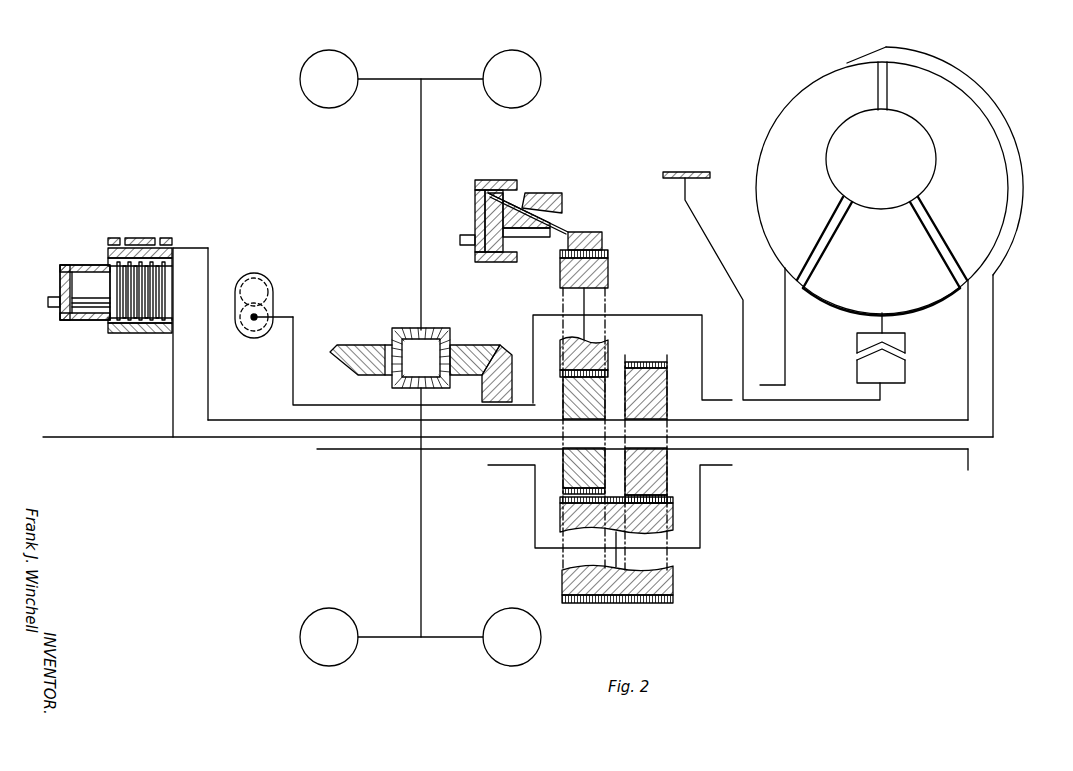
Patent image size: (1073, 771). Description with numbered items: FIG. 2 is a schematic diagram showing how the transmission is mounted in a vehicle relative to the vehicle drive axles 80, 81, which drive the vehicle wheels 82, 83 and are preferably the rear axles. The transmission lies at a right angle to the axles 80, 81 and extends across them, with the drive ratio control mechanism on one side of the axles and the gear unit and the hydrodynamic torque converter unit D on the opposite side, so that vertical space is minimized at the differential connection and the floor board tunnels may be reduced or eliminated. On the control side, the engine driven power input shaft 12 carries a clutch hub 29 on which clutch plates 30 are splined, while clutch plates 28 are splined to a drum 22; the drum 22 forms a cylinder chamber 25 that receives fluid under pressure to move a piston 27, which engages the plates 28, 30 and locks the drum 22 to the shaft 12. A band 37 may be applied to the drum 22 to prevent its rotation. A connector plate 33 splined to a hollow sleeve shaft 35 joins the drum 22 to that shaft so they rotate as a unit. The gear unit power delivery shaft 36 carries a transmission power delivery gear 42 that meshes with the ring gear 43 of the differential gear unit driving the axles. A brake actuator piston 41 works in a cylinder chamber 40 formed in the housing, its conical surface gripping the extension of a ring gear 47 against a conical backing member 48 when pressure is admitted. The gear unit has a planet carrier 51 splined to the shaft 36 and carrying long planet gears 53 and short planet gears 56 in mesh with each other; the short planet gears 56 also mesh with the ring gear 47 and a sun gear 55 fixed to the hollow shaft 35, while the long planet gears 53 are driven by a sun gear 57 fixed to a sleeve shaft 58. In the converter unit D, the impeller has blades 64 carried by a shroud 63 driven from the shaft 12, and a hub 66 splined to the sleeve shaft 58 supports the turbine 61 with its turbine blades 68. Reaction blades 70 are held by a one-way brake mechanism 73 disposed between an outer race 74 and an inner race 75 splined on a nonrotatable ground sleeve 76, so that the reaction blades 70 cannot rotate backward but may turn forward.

The power input shaft 12 is at (215, 437).
The drum 22 is at (110, 250).
The cylinder chamber 25 is at (72, 272).
The piston 27 is at (90, 310).
The clutch plates 28 is at (160, 268).
The clutch hub 29 is at (150, 333).
The clutch plates 30 is at (167, 290).
The connector plate 33 is at (218, 306).
The hollow sleeve shaft 35 is at (258, 404).
The gear unit power delivery shaft 36 is at (330, 403).
The band 37 is at (163, 240).
The cylinder chamber 40 is at (487, 182).
The brake actuator piston 41 is at (505, 202).
The transmission power delivery gear 42 is at (512, 350).
The ring gear 43 is at (478, 340).
The ring gear 47 is at (600, 235).
The conical backing member 48 is at (562, 205).
The planet carrier 51 is at (533, 320).
The long planet gears 53 is at (672, 527).
The sun gear 55 is at (565, 458).
The short planet gears 56 is at (608, 268).
The sun gear 57 is at (660, 407).
The sleeve shaft 58 is at (930, 447).
The turbine 61 is at (1000, 128).
The shroud 63 is at (993, 335).
The blades 64 is at (800, 122).
The hub 66 is at (968, 328).
The turbine blades 68 is at (945, 148).
The reaction blades 70 is at (875, 222).
The one-way brake mechanism 73 is at (857, 345).
The outer race 74 is at (905, 338).
The inner race 75 is at (878, 368).
The ground sleeve 76 is at (815, 400).
The vehicle drive axle 80 is at (421, 512).
The vehicle drive axle 81 is at (421, 150).
The vehicle wheel 82 is at (395, 637).
The vehicle wheel 83 is at (383, 79).
The hydrodynamic torque converter unit D is at (992, 92).